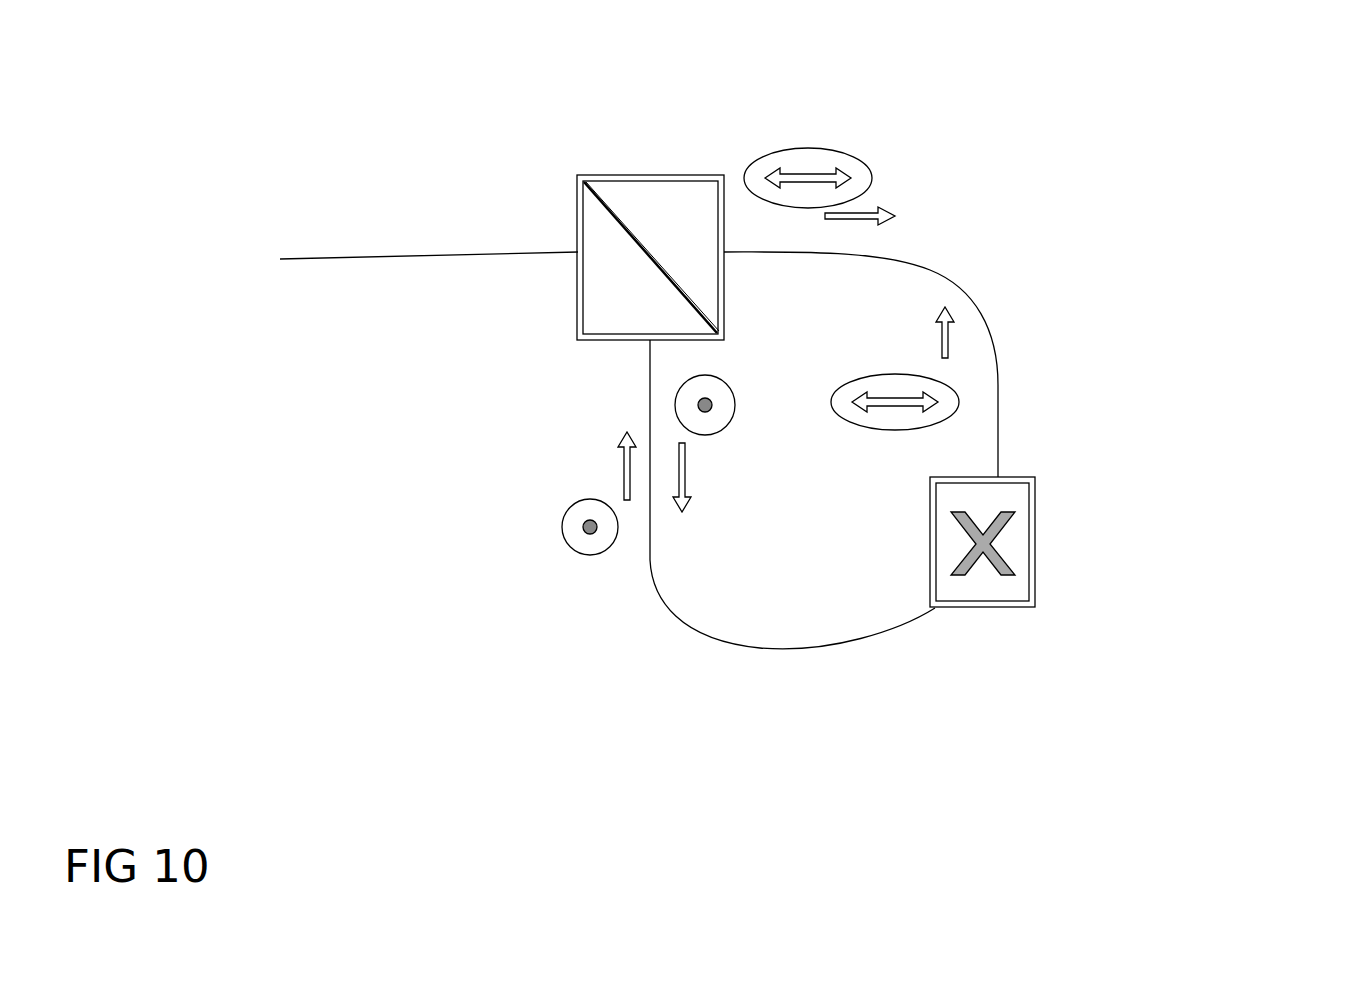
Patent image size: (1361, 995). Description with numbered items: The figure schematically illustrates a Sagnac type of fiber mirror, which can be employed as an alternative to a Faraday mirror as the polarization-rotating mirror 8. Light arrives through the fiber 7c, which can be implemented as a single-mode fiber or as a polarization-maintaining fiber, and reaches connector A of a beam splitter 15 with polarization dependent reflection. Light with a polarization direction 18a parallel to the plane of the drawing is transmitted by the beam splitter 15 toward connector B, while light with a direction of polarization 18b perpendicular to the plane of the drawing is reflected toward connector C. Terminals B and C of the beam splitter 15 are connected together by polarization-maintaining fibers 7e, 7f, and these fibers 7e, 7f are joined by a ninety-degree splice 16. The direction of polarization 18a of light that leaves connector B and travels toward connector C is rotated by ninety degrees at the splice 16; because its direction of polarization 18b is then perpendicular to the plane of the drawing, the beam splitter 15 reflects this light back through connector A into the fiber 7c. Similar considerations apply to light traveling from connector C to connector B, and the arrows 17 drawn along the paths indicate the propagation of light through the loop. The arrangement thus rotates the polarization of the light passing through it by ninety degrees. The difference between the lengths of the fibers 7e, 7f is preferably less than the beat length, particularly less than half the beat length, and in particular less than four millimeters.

The polarization-rotating mirror 8 is at (1222, 77).
The fiber 7c is at (318, 250).
The polarization-maintaining fiber 7e is at (735, 645).
The polarization-maintaining fiber 7f is at (987, 333).
The beam splitter 15 is at (628, 207).
The 90° splice 16 is at (1007, 588).
The propagation direction 17 is at (868, 205).
The polarization direction 18a is at (818, 150).
The direction of polarization 18b is at (727, 390).